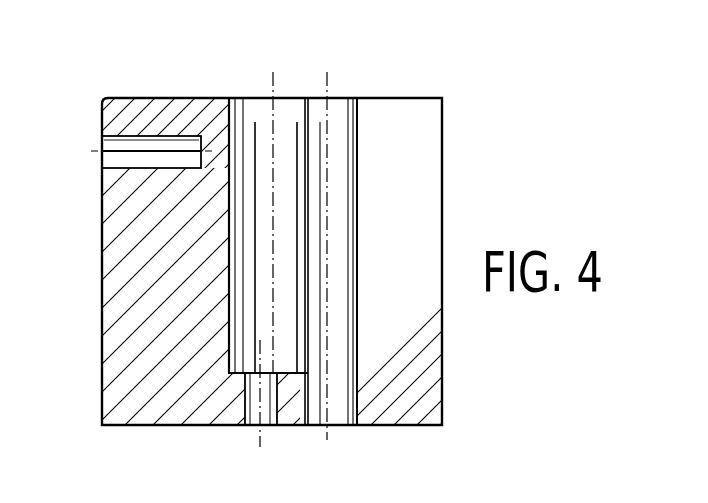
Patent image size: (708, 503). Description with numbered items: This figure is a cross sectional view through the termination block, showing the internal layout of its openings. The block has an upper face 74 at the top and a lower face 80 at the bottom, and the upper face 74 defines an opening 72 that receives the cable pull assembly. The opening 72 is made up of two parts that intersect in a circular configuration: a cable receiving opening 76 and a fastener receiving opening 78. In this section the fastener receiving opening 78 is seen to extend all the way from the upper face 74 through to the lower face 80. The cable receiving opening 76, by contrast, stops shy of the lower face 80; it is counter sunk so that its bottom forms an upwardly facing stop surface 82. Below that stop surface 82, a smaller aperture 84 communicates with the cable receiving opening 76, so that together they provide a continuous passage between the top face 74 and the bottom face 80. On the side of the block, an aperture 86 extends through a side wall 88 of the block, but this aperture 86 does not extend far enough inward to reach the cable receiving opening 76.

The opening 72 is at (287, 158).
The upper face 74 is at (152, 98).
The cable receiving opening 76 is at (228, 122).
The fastener receiving opening 78 is at (357, 140).
The lower face 80 is at (395, 425).
The stop surface 82 is at (288, 367).
The aperture 84 is at (245, 410).
The aperture 86 is at (127, 168).
The side wall 88 is at (100, 267).